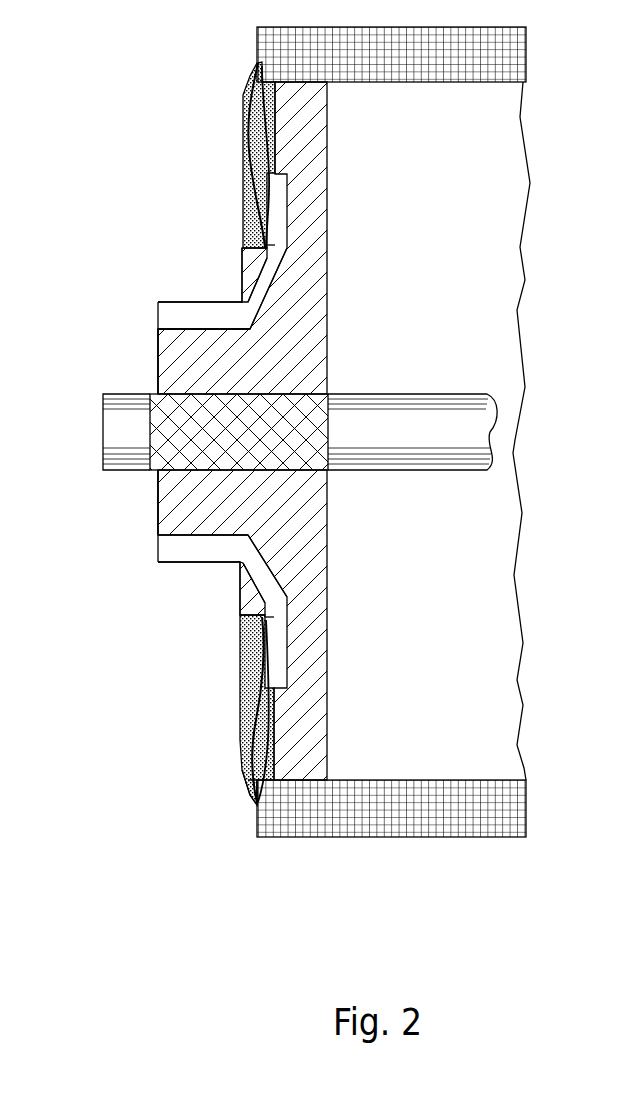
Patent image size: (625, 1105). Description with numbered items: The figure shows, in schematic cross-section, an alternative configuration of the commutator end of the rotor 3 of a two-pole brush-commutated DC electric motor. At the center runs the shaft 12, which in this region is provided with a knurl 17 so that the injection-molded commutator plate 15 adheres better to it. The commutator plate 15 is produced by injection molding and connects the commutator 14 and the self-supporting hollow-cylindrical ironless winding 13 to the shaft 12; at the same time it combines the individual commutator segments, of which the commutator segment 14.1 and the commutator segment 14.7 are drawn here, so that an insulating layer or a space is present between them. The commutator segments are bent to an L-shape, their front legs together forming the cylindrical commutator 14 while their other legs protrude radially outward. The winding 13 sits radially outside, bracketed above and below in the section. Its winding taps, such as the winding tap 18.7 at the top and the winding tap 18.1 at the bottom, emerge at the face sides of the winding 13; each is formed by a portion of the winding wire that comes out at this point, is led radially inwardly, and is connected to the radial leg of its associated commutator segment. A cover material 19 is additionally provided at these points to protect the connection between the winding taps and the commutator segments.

The rotor 3 is at (122, 631).
The shaft 12 is at (418, 466).
The self-supporting hollow-cylindrical ironless winding 13 is at (376, 838).
The commutator 14 is at (156, 299).
The commutator segment 14.1 is at (179, 553).
The commutator segment 14.7 is at (192, 312).
The commutator plate 15 is at (328, 304).
The knurl 17 is at (192, 452).
The winding tap 18.1 is at (248, 797).
The winding tap 18.7 is at (258, 78).
The cover material 19 is at (240, 697).